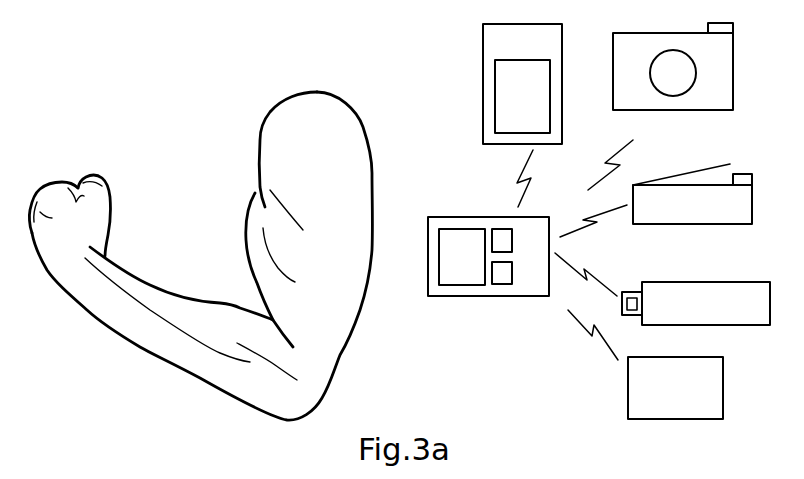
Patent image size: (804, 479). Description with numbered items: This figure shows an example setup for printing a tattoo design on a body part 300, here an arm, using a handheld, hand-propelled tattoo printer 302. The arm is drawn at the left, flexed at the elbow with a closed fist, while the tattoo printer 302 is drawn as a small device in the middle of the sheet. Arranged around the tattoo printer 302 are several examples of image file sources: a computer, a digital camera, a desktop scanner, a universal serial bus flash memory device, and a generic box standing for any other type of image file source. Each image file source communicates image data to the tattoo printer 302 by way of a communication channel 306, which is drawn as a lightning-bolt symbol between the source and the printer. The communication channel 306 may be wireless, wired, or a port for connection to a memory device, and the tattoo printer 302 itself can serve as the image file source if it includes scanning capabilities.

The body part 300 is at (303, 92).
The tattoo printer 302 is at (480, 217).
The communication channel 306 is at (568, 310).